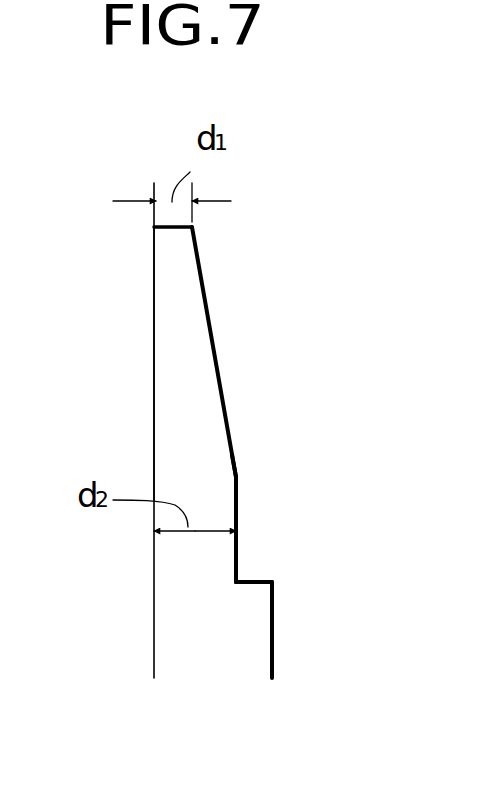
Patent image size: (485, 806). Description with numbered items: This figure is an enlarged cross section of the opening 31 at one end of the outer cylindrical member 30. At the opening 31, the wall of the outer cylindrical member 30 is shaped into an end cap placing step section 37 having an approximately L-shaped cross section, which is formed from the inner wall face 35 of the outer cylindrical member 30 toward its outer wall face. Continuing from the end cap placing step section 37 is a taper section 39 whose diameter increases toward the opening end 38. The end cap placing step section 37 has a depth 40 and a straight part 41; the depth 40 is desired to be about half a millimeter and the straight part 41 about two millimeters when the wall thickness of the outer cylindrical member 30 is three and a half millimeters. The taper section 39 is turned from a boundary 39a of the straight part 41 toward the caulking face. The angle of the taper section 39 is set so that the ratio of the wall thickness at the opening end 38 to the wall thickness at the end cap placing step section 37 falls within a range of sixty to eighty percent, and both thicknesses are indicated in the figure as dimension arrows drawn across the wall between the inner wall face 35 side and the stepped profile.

The outer cylindrical member 30 is at (148, 597).
The opening 31 is at (147, 320).
The inner wall face 35 is at (275, 637).
The end cap placing step section 37 is at (242, 556).
The opening end 38 is at (172, 226).
The taper section 39 is at (222, 365).
The boundary 39a is at (240, 475).
The depth 40 is at (255, 581).
The straight part 41 is at (240, 507).